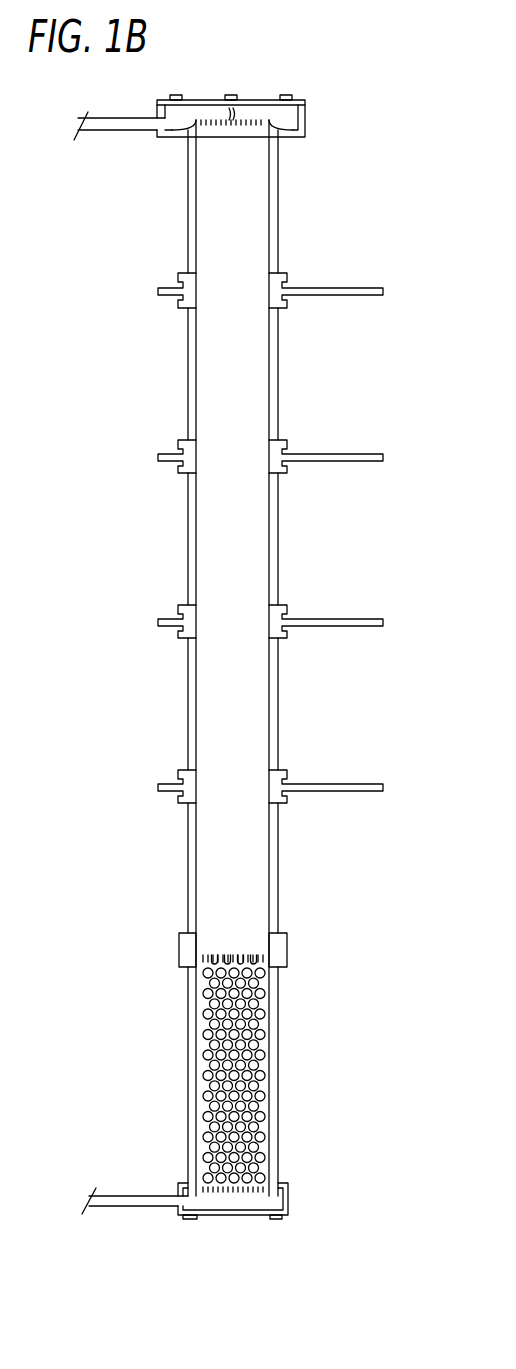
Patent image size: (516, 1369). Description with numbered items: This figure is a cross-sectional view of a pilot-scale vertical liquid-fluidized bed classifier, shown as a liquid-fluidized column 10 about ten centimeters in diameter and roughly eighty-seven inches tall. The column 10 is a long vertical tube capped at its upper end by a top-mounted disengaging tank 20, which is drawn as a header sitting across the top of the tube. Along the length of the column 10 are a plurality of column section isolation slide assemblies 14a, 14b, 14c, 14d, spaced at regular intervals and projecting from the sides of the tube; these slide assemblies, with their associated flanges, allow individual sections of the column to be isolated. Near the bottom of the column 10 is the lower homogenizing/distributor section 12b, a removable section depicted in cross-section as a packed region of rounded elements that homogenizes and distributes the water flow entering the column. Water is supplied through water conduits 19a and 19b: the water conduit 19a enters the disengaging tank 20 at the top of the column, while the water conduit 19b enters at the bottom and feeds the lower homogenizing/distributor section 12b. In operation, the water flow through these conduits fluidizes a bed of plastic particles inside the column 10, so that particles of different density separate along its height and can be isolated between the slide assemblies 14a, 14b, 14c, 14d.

The liquid-fluidized column 10 is at (140, 545).
The top-mounted disengaging tank 20 is at (306, 118).
The water conduit 19a is at (133, 130).
The water conduit 19b is at (140, 1196).
The column section isolation slide assembly 14a is at (315, 287).
The column section isolation slide assembly 14b is at (315, 453).
The column section isolation slide assembly 14c is at (315, 618).
The column section isolation slide assembly 14d is at (315, 783).
The lower homogenizing/distributor section 12b is at (207, 1032).